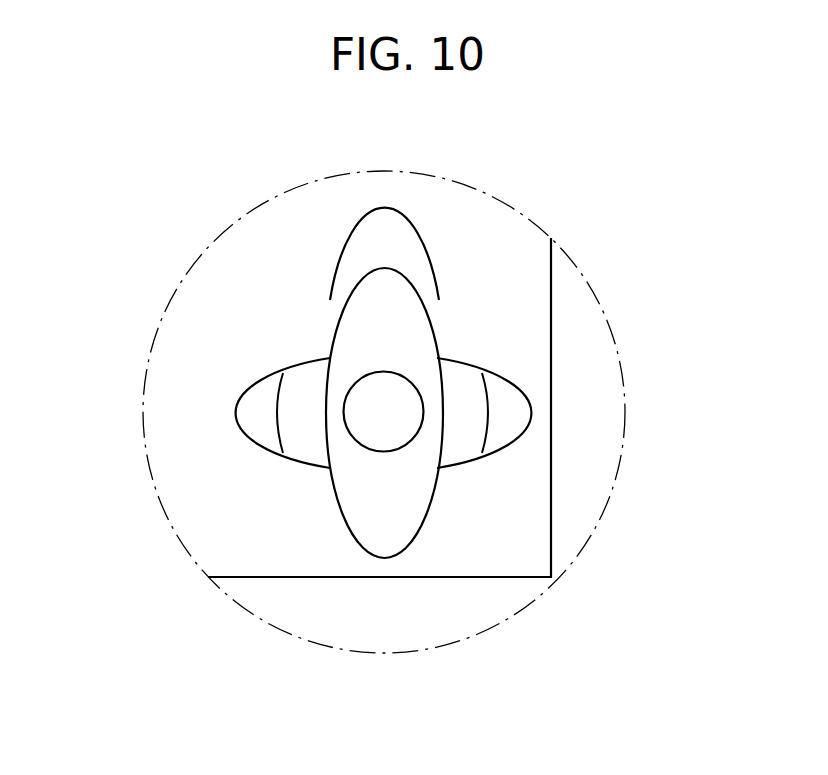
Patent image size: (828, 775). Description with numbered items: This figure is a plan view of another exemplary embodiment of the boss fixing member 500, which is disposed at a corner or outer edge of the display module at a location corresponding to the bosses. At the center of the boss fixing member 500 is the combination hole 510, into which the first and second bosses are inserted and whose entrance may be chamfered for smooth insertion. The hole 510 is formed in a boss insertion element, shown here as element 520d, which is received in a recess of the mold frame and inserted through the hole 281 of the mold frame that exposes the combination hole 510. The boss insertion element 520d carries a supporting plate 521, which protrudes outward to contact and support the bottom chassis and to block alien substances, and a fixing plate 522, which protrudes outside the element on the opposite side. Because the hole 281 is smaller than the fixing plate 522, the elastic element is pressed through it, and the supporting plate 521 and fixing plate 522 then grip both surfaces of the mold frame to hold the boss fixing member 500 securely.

The boss fixing member 500 is at (290, 348).
The combination hole 510 is at (390, 401).
The vertical elliptical pattern 520d is at (355, 547).
The supporting plate 521 is at (475, 408).
The fixing plate 522 is at (383, 277).
The hole 281 is at (255, 416).